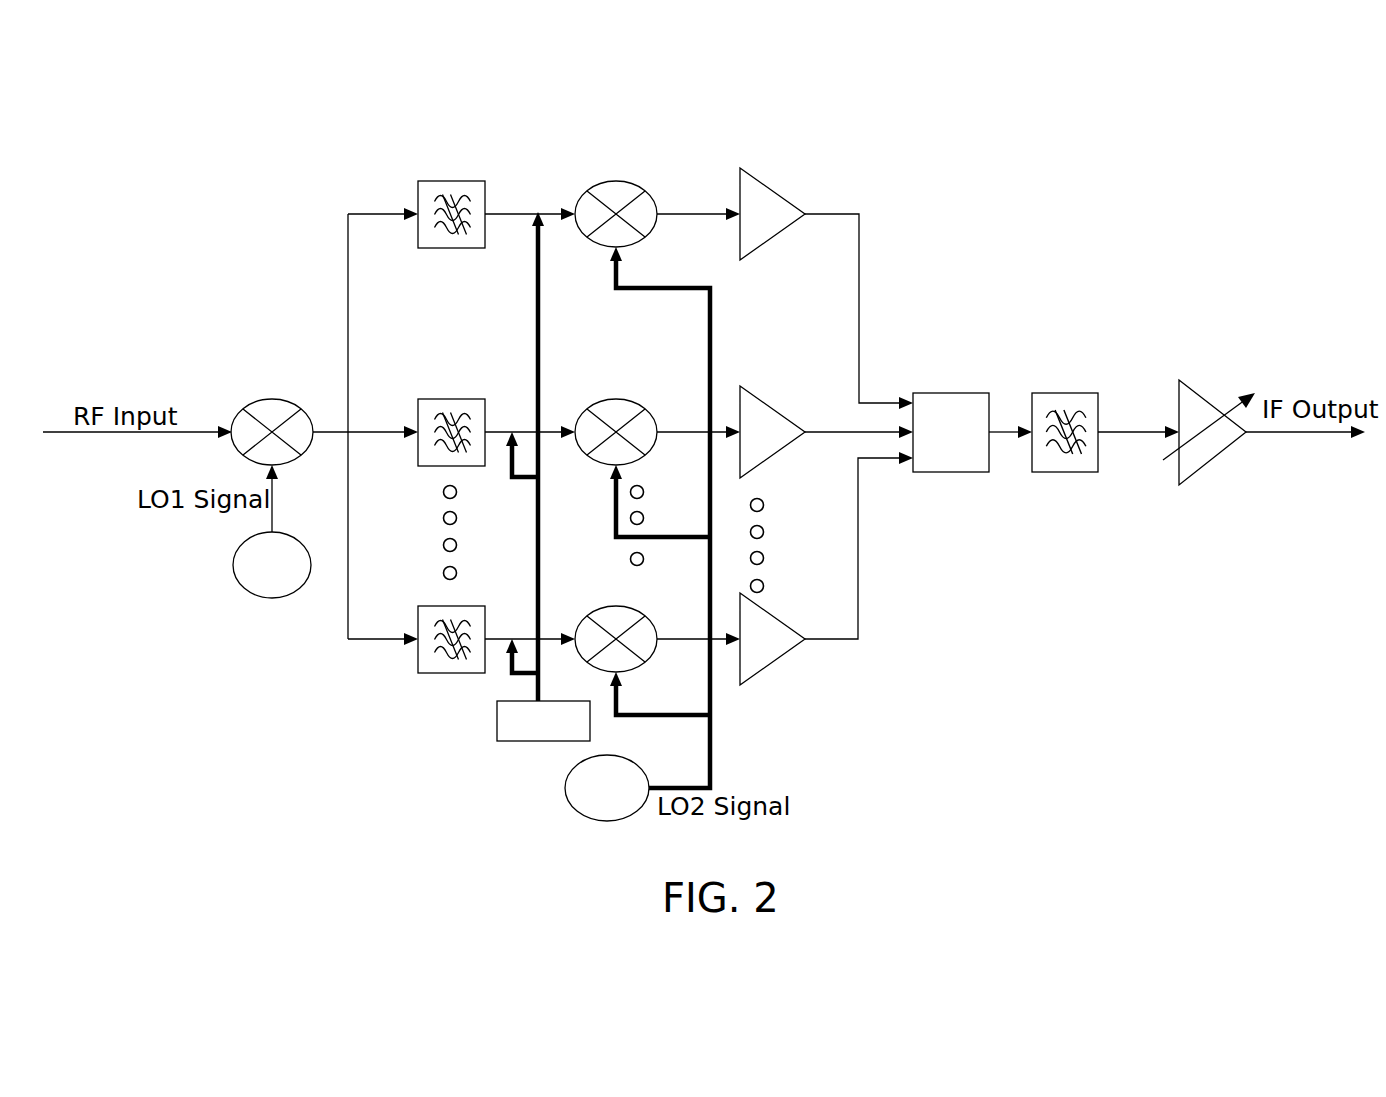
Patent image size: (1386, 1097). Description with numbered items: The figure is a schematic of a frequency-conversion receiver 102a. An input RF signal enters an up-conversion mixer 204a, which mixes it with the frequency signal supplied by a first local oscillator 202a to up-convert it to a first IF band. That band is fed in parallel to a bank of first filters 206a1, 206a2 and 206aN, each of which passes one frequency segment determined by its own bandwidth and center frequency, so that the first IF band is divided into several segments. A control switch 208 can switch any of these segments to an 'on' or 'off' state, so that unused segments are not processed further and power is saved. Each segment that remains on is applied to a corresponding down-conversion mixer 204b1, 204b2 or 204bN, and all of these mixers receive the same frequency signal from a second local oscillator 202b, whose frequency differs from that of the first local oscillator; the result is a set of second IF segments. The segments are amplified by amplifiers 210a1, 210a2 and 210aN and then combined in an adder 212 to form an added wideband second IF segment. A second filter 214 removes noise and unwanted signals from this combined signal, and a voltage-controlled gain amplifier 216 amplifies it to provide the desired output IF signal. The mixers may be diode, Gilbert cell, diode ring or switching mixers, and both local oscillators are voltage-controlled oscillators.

The frequency-conversion receiver 102a is at (177, 717).
The first local oscillator 202a is at (272, 598).
The second local oscillator 202b is at (603, 822).
The up-conversion mixer 204a is at (273, 398).
The down-conversion mixer 204b1 is at (587, 185).
The down-conversion mixer 204b2 is at (587, 407).
The down-conversion mixer 204bN is at (587, 613).
The first filter 206a1 is at (450, 181).
The first filter 206a2 is at (450, 399).
The first filter 206aN is at (450, 606).
The control switch 208 is at (497, 722).
The amplifier 210a1 is at (747, 253).
The amplifier 210a2 is at (747, 472).
The amplifier 210aN is at (747, 680).
The adder 212 is at (950, 393).
The second filter 214 is at (1067, 393).
The voltage-controlled gain amplifier 216 is at (1210, 455).